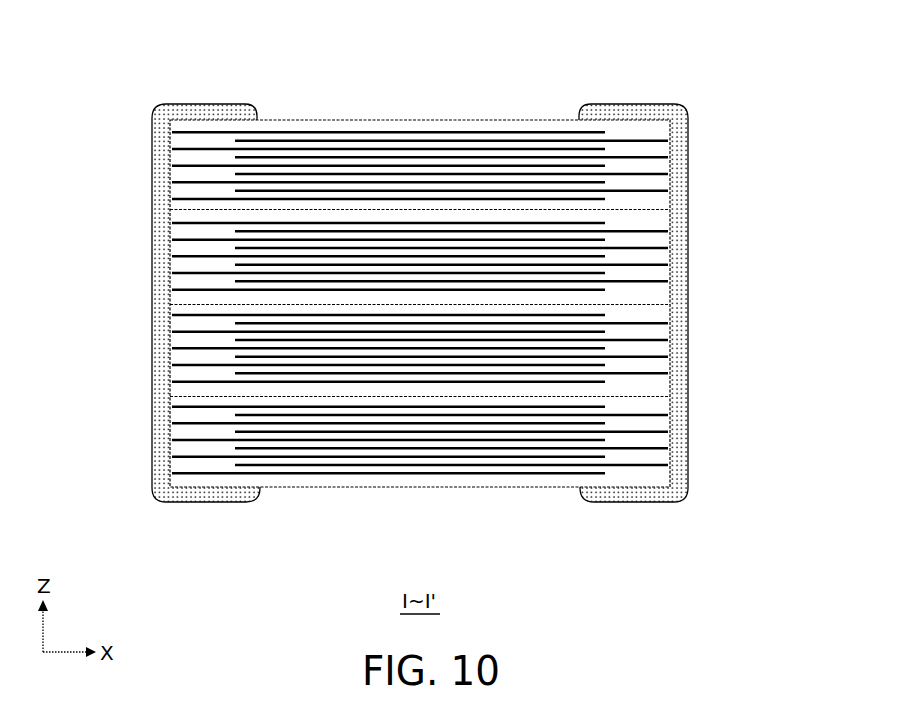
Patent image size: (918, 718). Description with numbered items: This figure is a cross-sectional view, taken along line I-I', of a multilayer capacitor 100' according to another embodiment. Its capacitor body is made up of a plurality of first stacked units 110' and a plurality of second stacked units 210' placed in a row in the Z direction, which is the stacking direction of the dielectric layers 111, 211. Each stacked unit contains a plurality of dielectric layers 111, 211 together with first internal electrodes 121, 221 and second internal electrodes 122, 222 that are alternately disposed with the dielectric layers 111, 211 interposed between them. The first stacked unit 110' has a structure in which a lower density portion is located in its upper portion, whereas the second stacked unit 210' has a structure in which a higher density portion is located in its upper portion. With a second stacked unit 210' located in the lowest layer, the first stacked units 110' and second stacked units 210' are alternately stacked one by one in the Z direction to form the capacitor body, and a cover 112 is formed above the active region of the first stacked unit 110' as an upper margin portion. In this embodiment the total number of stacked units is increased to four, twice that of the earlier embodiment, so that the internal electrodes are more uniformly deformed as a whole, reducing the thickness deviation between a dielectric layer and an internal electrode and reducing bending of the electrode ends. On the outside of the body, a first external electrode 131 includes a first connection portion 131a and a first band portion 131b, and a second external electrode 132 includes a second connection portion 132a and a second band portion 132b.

The multilayer capacitor 100' is at (422, 271).
The cover 112 is at (394, 121).
The first stacked unit 110' is at (421, 223).
The dielectric layer 111 is at (193, 158).
The first internal electrode 121 is at (284, 129).
The second internal electrode 122 is at (500, 138).
The second stacked unit 210' is at (421, 334).
The dielectric layer 211 is at (193, 233).
The first internal electrode 221 is at (193, 220).
The second internal electrode 222 is at (648, 263).
The first external electrode 131 is at (62, 452).
The first connection portion 131a is at (162, 462).
The first band portion 131b is at (205, 495).
The second external electrode 132 is at (777, 452).
The second connection portion 132a is at (688, 458).
The second band portion 132b is at (641, 495).